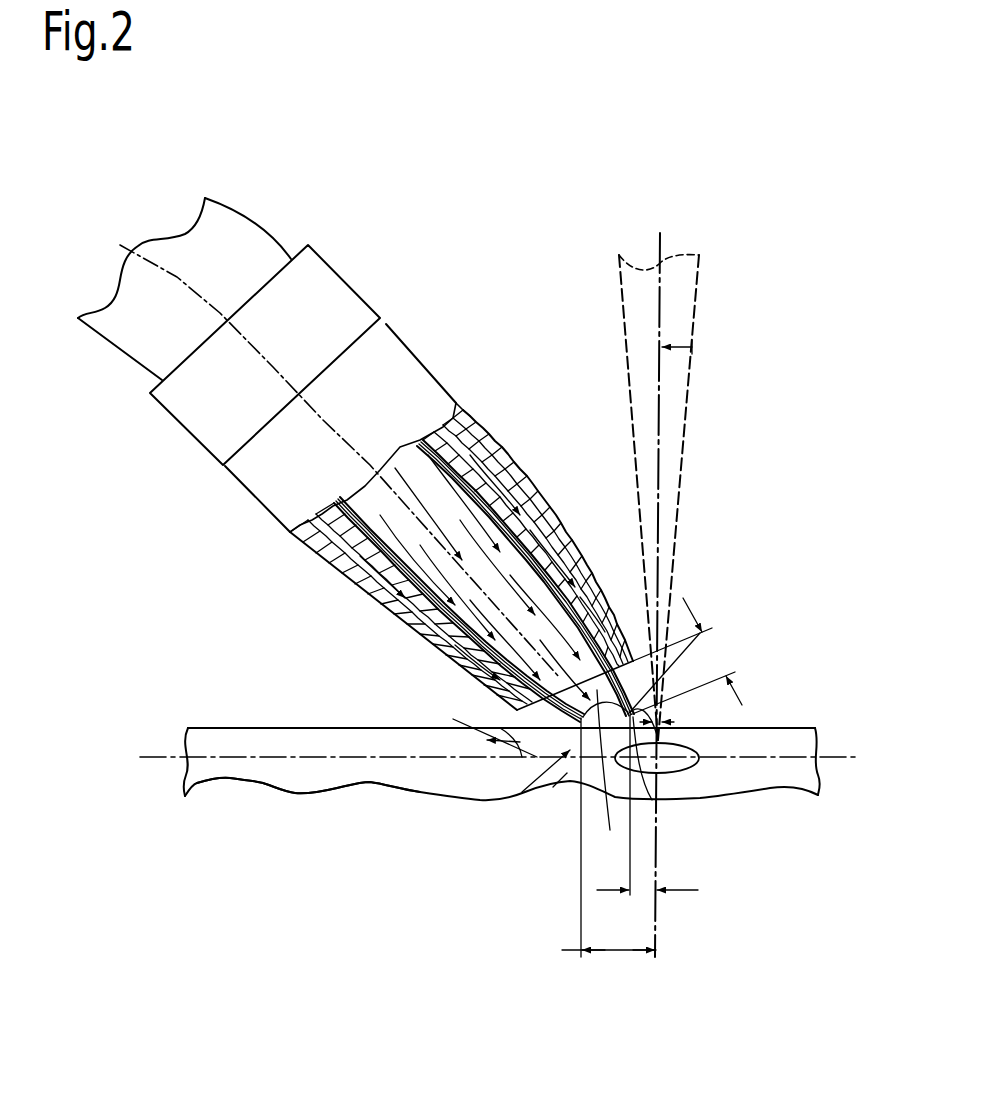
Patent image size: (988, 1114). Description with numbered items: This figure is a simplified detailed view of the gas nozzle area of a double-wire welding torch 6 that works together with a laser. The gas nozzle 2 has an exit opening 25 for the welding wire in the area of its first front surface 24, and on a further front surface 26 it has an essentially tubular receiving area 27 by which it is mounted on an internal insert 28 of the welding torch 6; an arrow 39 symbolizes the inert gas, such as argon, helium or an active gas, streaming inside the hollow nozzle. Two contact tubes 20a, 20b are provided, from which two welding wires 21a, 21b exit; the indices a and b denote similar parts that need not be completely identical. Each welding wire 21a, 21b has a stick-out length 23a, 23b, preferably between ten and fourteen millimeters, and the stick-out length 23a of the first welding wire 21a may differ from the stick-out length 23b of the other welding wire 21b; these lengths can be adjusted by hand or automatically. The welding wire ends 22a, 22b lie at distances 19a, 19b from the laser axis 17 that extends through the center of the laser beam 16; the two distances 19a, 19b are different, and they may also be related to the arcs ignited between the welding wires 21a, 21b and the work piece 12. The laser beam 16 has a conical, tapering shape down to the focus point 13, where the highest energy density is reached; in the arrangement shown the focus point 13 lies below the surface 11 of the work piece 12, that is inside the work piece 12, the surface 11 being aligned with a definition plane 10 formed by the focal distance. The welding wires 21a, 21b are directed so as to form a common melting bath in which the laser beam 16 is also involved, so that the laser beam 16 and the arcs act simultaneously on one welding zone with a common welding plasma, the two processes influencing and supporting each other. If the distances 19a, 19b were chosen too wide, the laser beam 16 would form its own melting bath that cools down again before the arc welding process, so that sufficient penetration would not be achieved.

The gas nozzle 2 is at (483, 378).
The welding torch 6 is at (133, 486).
The definition plane 10 is at (773, 752).
The surface 11 is at (266, 730).
The work piece 12 is at (281, 770).
The focus point 13 is at (706, 780).
The laser beam 16 is at (694, 387).
The laser axis 17 is at (703, 341).
The distance 19a is at (641, 888).
The distance 19b is at (618, 945).
The contact tube 20a is at (575, 598).
The contact tube 20b is at (426, 628).
The welding wire 21a is at (673, 692).
The welding wire 21b is at (580, 716).
The welding wire end 22a is at (718, 750).
The welding wire end 22b is at (553, 787).
The stick-out length 23a is at (716, 650).
The stick-out length 23b is at (512, 730).
The first front surface 24 is at (602, 800).
The exit opening 25 is at (653, 801).
The further front surface 26 is at (281, 414).
The receiving area 27 is at (411, 322).
The internal insert 28 is at (323, 262).
The arrow symbolizing inert gas 39 is at (522, 507).